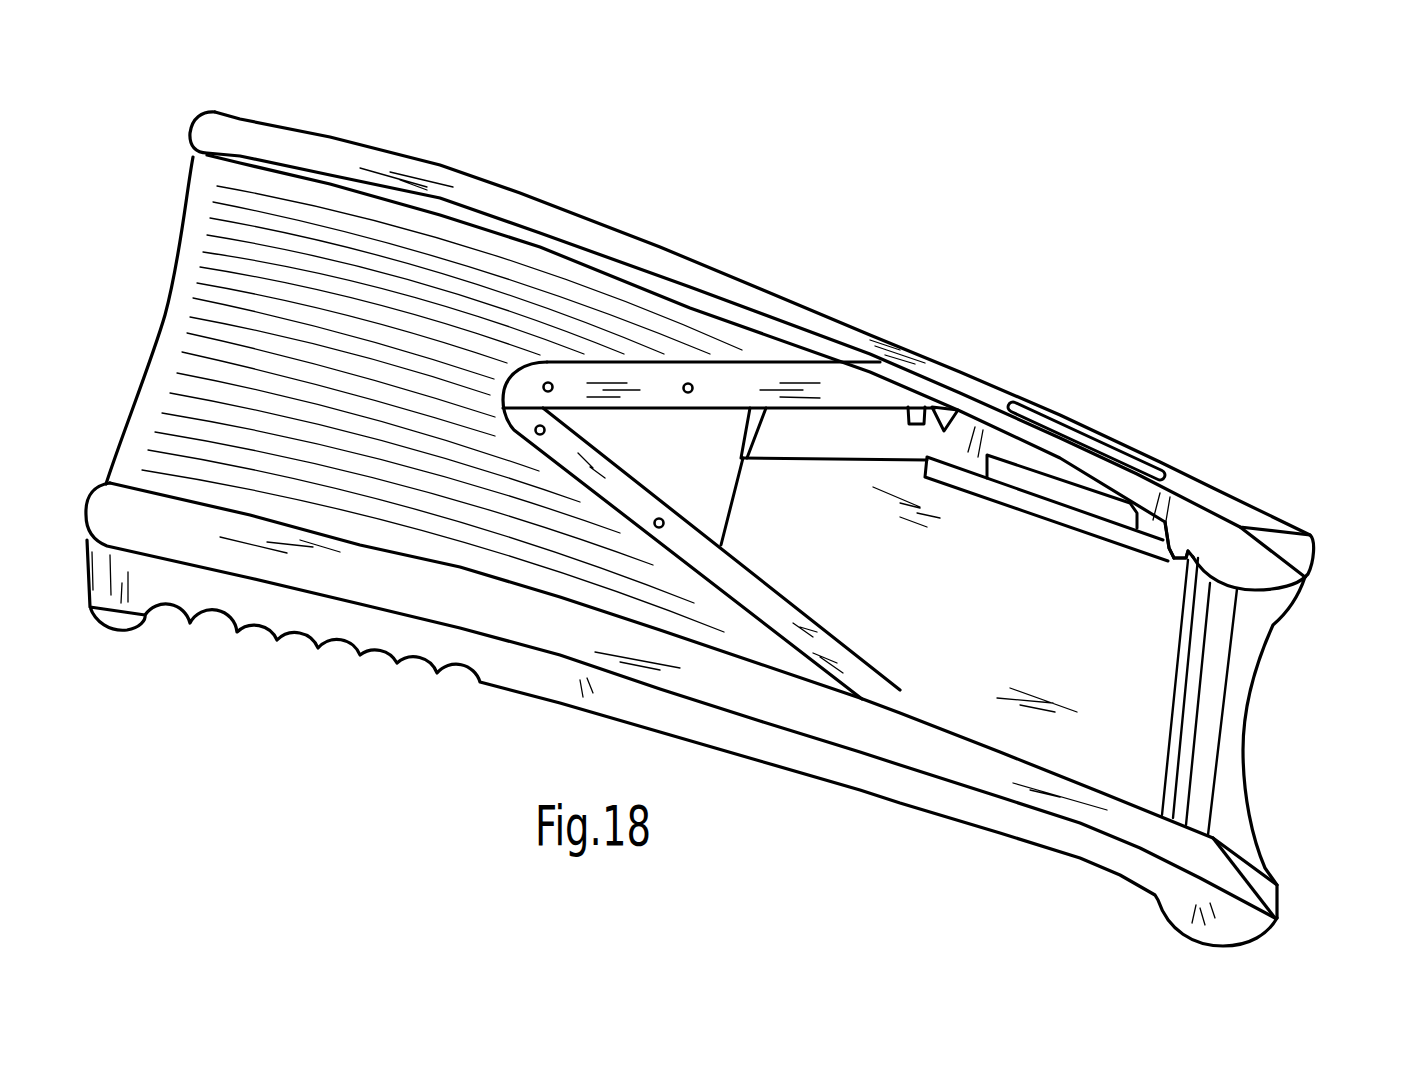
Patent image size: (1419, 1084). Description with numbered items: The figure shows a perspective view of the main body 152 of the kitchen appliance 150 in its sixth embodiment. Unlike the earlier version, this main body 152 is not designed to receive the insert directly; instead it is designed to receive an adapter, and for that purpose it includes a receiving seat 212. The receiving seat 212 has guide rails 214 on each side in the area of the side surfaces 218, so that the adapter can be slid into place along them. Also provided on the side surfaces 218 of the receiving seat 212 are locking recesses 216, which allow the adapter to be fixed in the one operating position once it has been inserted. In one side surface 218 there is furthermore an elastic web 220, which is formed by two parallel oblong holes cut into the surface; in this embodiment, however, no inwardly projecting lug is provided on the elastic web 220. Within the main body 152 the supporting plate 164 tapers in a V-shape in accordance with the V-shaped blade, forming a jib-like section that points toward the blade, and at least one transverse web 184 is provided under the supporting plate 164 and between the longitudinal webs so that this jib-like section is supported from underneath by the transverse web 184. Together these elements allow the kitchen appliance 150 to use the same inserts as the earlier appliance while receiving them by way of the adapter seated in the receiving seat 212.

The kitchen appliance 150 is at (1199, 286).
The main body 152 is at (690, 262).
The supporting plate 164 is at (970, 700).
The transverse web 184 is at (748, 442).
The receiving seat 212 is at (1136, 673).
The guide rails 214 is at (1170, 520).
The locking recesses 216 is at (957, 407).
The side surfaces 218 is at (1178, 530).
The elastic web 220 is at (1040, 455).